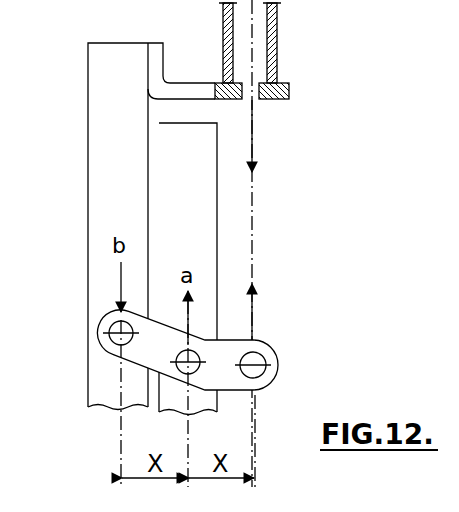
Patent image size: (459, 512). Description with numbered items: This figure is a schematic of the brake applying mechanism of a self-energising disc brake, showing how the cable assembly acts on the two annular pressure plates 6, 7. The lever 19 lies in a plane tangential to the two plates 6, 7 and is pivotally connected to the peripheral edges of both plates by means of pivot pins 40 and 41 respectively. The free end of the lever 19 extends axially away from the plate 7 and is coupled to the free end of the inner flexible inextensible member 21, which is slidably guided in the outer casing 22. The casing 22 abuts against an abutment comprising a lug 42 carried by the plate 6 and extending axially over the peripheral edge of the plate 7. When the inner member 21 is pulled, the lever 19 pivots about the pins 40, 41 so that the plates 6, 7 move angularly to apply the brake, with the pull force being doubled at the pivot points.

The pressure plate 6 is at (120, 182).
The pressure plate 7 is at (178, 143).
The lever 19 is at (233, 390).
The inner flexible inextensible member 21 is at (253, 255).
The casing 22 is at (280, 39).
The pivot pin 40 is at (99, 339).
The pivot pin 41 is at (176, 365).
The lug 42 is at (290, 89).